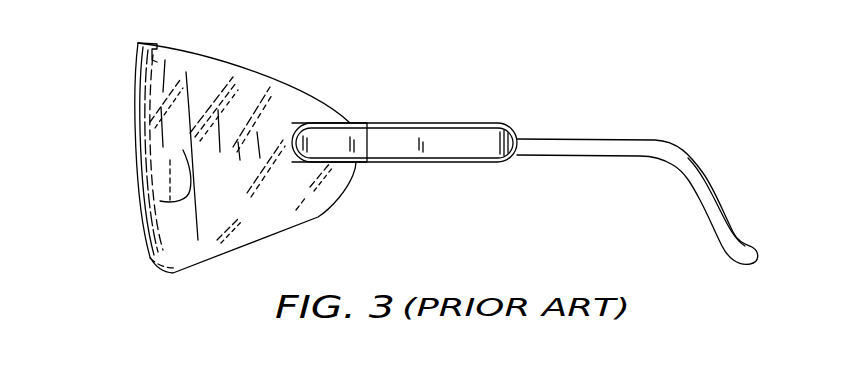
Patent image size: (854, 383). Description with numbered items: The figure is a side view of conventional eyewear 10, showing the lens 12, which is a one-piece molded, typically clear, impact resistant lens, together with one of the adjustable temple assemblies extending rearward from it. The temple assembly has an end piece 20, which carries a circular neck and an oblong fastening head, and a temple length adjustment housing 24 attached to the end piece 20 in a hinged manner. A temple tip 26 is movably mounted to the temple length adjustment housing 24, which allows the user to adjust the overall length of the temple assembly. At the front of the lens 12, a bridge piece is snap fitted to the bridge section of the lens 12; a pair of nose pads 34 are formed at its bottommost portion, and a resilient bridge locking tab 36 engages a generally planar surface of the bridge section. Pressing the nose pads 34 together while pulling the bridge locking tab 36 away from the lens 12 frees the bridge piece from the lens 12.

The eyewear 10 is at (567, 99).
The lens 12 is at (253, 239).
The end piece 20 is at (338, 145).
The temple length adjustment housing 24 is at (465, 136).
The temple tip 26 is at (600, 139).
The nose pads 34 is at (168, 200).
The bridge locking tab 36 is at (157, 50).